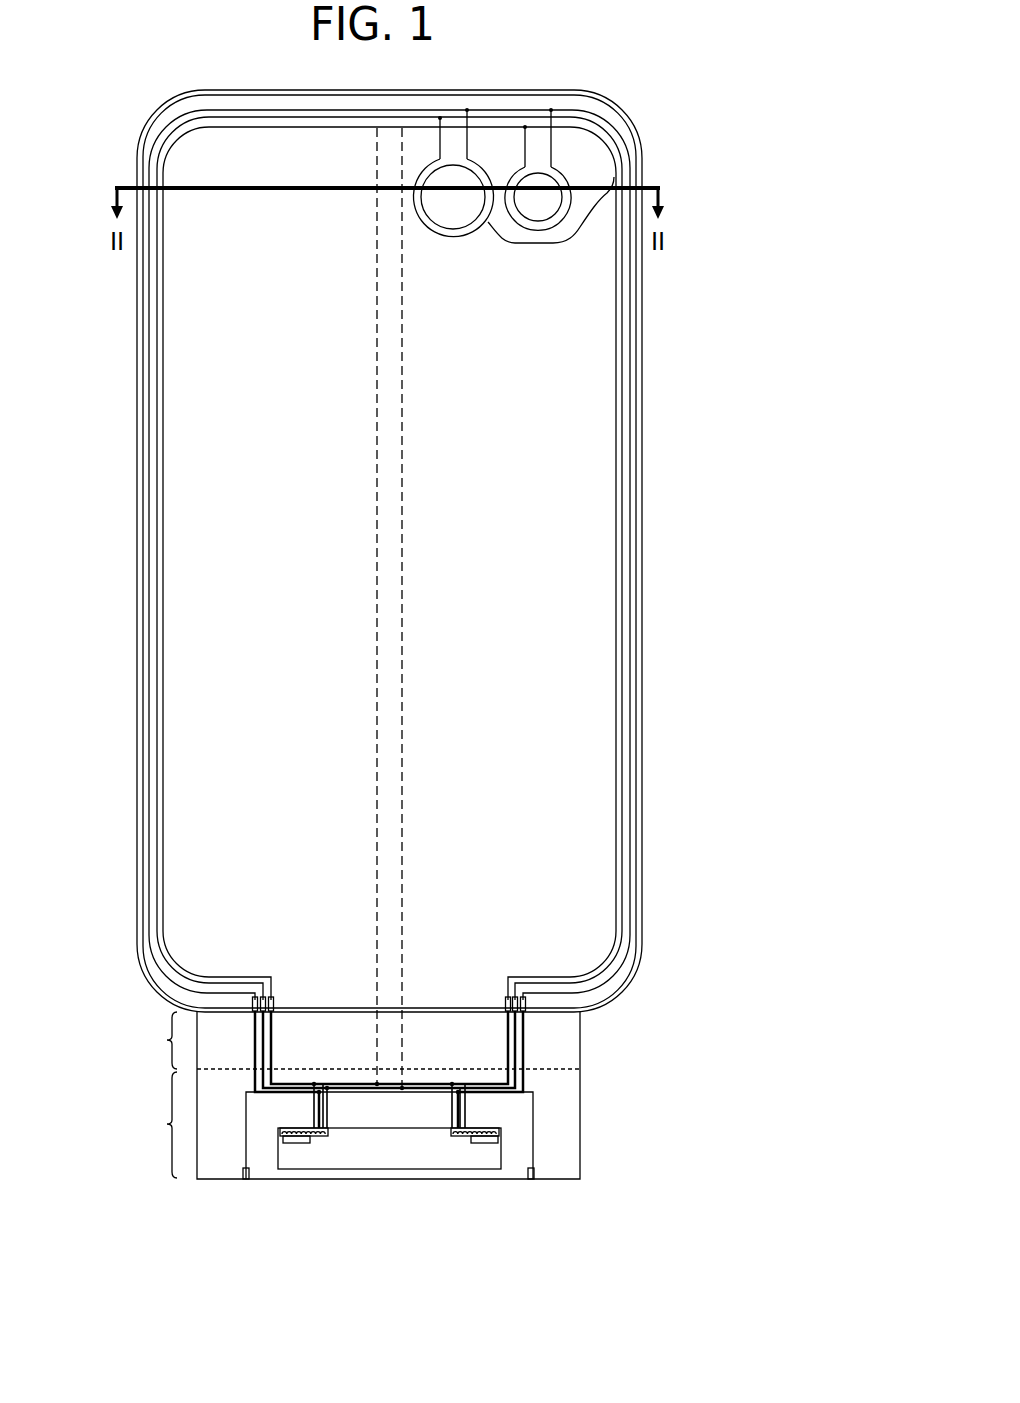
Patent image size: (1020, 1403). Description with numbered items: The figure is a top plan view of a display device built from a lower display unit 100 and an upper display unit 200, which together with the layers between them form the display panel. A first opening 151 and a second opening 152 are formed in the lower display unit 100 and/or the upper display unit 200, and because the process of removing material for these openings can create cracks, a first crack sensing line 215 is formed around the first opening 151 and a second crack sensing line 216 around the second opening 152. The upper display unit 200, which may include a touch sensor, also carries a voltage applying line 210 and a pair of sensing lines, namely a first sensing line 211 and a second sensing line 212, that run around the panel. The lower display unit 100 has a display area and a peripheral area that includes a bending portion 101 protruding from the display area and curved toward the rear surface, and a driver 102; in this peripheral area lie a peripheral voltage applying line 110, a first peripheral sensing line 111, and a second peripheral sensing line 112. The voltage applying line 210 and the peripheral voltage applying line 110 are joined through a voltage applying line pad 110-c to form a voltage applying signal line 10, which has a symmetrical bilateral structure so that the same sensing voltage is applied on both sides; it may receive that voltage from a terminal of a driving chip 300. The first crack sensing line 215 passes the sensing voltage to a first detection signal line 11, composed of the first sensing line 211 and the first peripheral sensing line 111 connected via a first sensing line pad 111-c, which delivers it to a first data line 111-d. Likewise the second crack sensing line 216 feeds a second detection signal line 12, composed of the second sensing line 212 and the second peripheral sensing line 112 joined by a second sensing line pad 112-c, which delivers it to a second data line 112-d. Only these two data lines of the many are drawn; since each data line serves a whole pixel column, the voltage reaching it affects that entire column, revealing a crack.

The lower display unit 100 is at (622, 120).
The upper display unit 200 is at (435, 513).
The voltage applying line 210 is at (630, 320).
The first sensing line 211 is at (622, 358).
The second sensing line 212 is at (614, 402).
The first crack sensing line 215 is at (607, 193).
The second crack sensing line 216 is at (560, 173).
The first opening 151 is at (453, 158).
The second opening 152 is at (538, 170).
The peripheral voltage applying line 110 is at (245, 1133).
The first peripheral sensing line 111 is at (523, 1043).
The second peripheral sensing line 112 is at (513, 1060).
The voltage applying line pad 110-c is at (525, 1001).
The first sensing line pad 111-c is at (518, 1000).
The second sensing line pad 112-c is at (512, 995).
The first data line 111-d is at (377, 743).
The second data line 112-d is at (402, 743).
The bending portion 101 is at (352, 1040).
The driver 102 is at (151, 1125).
The voltage applying signal line 10 is at (717, 560).
The first detection signal line 11 is at (717, 673).
The second detection signal line 12 is at (717, 765).
The driving chip 300 is at (483, 1169).